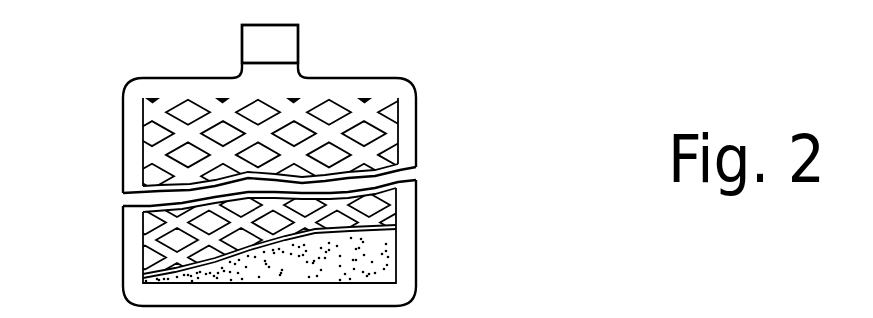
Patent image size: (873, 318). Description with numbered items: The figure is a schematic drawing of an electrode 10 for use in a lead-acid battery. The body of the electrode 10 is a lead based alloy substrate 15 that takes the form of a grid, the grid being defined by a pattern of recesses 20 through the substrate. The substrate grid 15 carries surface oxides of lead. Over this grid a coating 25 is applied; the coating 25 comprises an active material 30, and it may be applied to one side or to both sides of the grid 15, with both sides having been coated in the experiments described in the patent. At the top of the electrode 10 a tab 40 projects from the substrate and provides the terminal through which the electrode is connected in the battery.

The electrode 10 is at (118, 178).
The lead based alloy substrate 15 is at (372, 117).
The recesses 20 is at (190, 115).
The coating 25 is at (372, 257).
The active material 30 is at (372, 257).
The tab 40 is at (272, 52).